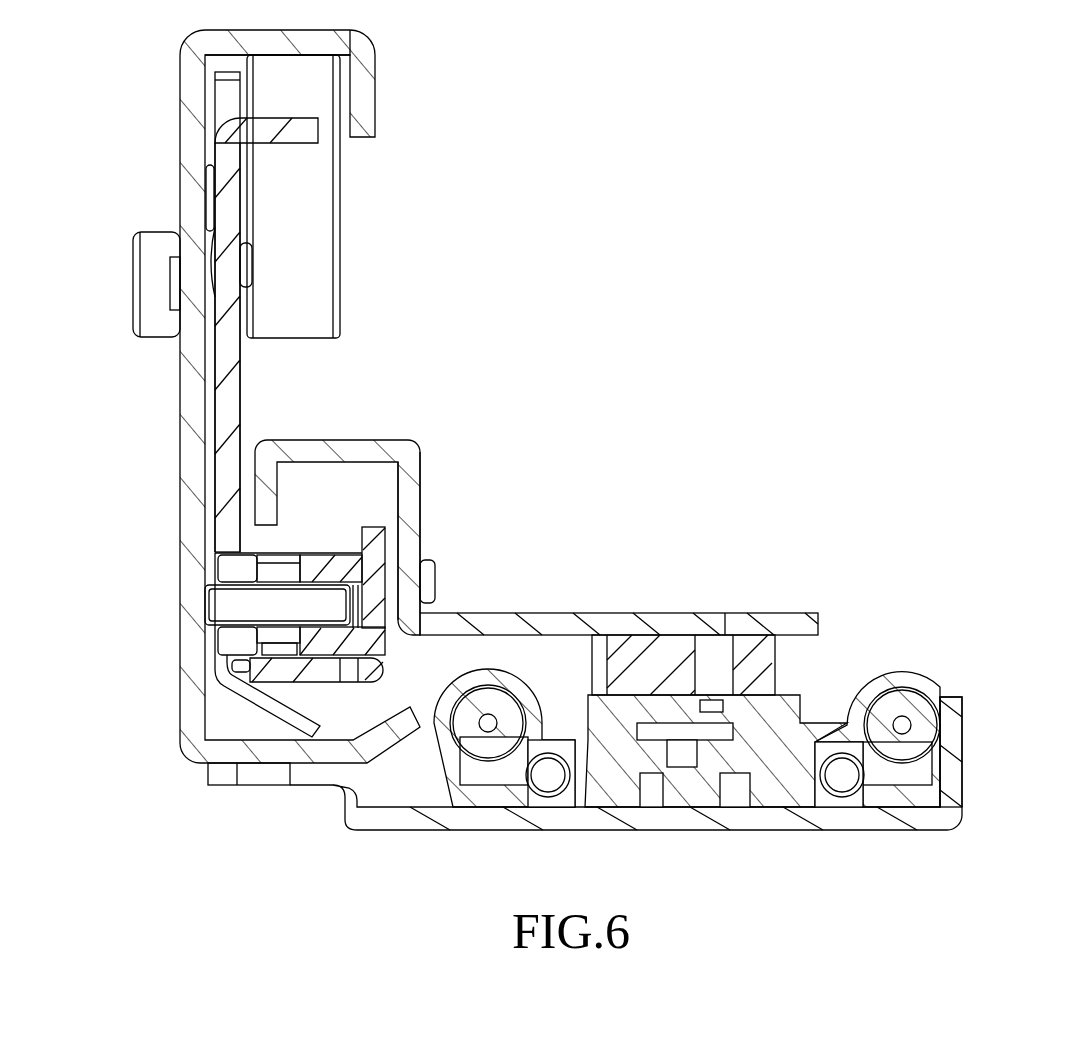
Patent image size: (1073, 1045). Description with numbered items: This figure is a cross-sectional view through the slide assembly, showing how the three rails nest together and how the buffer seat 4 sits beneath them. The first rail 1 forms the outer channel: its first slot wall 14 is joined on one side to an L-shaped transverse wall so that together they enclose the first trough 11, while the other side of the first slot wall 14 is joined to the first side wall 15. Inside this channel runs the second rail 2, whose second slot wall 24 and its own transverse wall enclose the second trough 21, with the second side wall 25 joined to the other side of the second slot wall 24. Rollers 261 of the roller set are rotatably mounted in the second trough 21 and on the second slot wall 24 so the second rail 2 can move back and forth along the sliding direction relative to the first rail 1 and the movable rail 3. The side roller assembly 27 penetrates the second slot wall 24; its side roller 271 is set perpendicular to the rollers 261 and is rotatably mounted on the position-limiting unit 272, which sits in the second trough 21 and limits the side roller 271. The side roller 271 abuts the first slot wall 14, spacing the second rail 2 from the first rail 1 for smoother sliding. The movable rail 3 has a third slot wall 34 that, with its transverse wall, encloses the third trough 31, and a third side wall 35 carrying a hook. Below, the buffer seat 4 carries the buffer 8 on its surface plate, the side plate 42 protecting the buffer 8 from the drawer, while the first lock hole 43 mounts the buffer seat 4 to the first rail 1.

The first rail 1 is at (168, 142).
The first trough 11 is at (203, 72).
The first slot wall 14 is at (238, 412).
The first side wall 15 is at (222, 740).
The second rail 2 is at (210, 458).
The second trough 21 is at (363, 538).
The second slot wall 24 is at (240, 372).
The second side wall 25 is at (297, 145).
The rollers 261 is at (313, 265).
The side roller assembly 27 is at (100, 540).
The side roller 271 is at (233, 607).
The position-limiting unit 272 is at (215, 565).
The movable rail 3 is at (790, 601).
The third trough 31 is at (378, 463).
The third slot wall 34 is at (420, 525).
The third side wall 35 is at (618, 613).
The buffer seat 4 is at (978, 775).
The side plate 42 is at (966, 727).
The first lock hole 43 is at (262, 773).
The buffer 8 is at (912, 660).